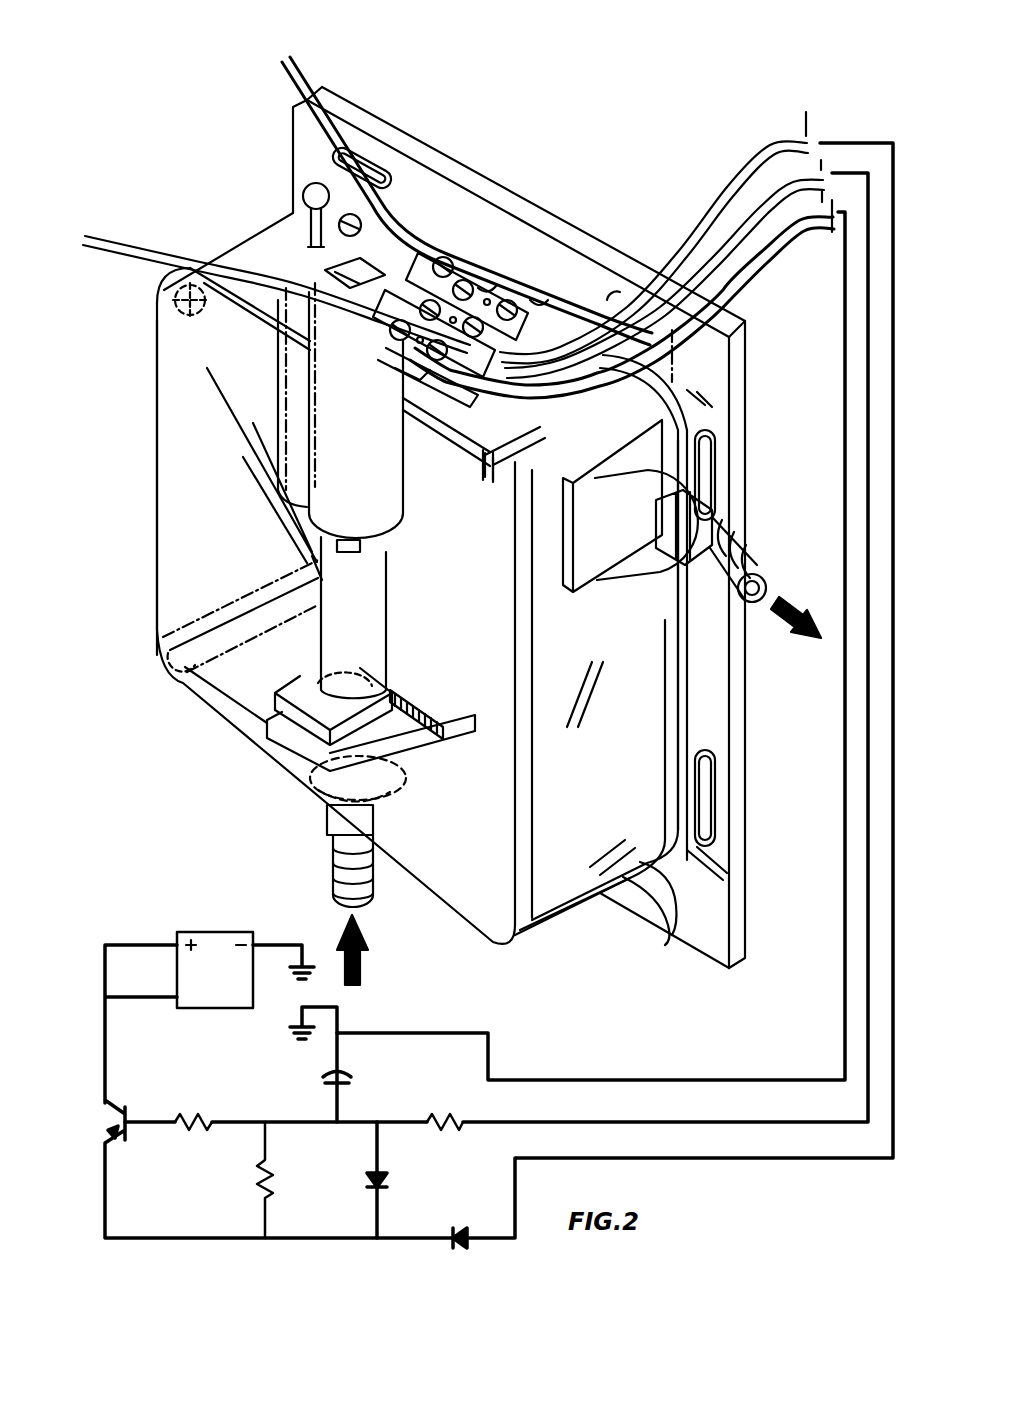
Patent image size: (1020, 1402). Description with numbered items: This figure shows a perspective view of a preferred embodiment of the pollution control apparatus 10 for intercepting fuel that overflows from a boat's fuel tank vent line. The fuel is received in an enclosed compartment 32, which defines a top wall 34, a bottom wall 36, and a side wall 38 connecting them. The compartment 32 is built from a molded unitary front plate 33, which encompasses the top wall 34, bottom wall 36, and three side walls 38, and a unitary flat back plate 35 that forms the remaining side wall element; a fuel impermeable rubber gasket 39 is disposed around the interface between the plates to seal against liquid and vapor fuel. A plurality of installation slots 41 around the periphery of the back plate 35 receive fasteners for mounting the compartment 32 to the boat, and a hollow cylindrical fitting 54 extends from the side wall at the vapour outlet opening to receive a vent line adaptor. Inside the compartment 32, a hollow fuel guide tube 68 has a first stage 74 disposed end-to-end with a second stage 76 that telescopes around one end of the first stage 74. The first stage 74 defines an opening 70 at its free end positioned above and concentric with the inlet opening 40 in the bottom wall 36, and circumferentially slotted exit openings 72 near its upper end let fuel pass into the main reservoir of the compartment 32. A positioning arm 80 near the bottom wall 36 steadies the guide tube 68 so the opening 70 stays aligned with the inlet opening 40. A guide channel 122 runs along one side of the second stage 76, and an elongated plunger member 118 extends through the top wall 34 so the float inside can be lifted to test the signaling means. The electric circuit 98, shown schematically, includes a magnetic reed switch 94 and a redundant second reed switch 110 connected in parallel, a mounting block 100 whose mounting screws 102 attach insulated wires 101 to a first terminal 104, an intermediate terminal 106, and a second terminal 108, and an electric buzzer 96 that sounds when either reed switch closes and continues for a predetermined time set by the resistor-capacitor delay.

The fluid shutoff alarm device 10 is at (655, 78).
The compartment 32 is at (155, 420).
The front plate 33 is at (585, 884).
The top wall 34 is at (596, 420).
The back plate 35 is at (747, 924).
The bottom wall 36 is at (430, 895).
The side wall 38 is at (178, 558).
The rubber gasket 39 is at (680, 940).
The inlet opening 40 is at (443, 727).
The installation slots 41 is at (395, 148).
The cylindrical fitting 54 is at (618, 553).
The fuel guide tube 68 is at (398, 525).
The guide tube opening 70 is at (253, 723).
The exit openings 72 is at (303, 560).
The first stage 74 is at (387, 655).
The second stage 76 is at (402, 489).
The positioning arm 80 is at (317, 677).
The magnetic reed switch 94 is at (412, 294).
The electric buzzer 96 is at (196, 1005).
The electric circuit 98 is at (199, 873).
The mounting block 100 is at (442, 379).
The insulated wires 101 is at (187, 248).
The mounting screws 102 is at (457, 260).
The first terminal 104 is at (520, 297).
The intermediate terminal 106 is at (482, 287).
The second terminal 108 is at (400, 368).
The second reed switch 110 is at (365, 258).
The plunger member 118 is at (300, 213).
The guide channel 122 is at (285, 367).